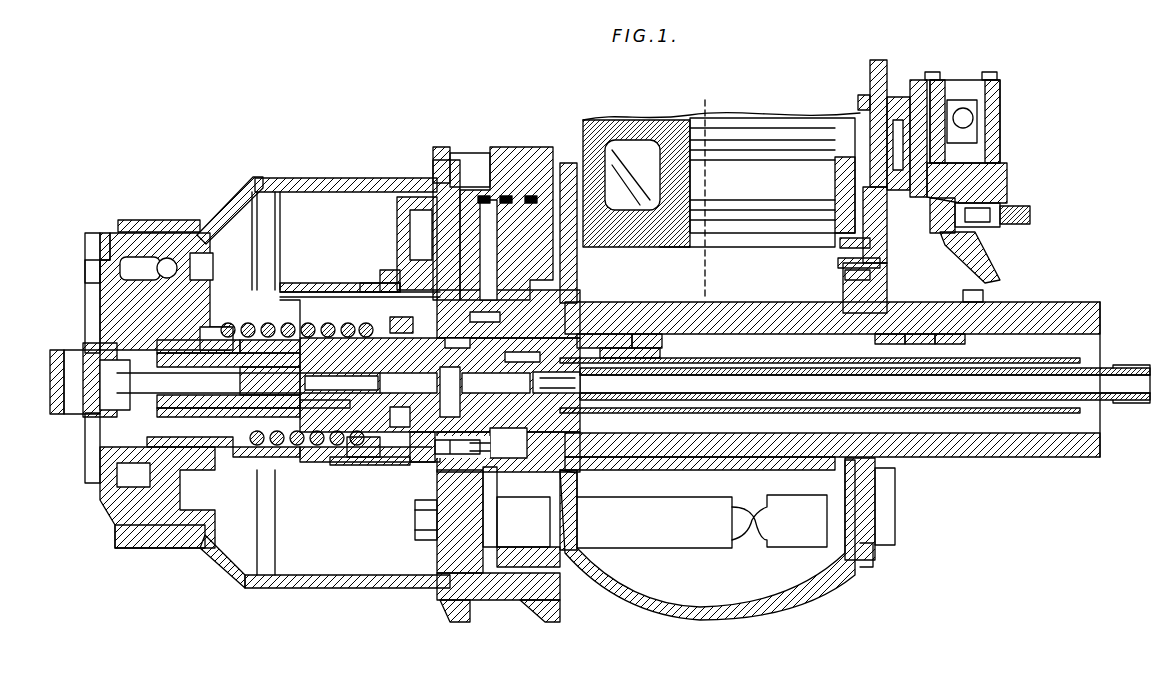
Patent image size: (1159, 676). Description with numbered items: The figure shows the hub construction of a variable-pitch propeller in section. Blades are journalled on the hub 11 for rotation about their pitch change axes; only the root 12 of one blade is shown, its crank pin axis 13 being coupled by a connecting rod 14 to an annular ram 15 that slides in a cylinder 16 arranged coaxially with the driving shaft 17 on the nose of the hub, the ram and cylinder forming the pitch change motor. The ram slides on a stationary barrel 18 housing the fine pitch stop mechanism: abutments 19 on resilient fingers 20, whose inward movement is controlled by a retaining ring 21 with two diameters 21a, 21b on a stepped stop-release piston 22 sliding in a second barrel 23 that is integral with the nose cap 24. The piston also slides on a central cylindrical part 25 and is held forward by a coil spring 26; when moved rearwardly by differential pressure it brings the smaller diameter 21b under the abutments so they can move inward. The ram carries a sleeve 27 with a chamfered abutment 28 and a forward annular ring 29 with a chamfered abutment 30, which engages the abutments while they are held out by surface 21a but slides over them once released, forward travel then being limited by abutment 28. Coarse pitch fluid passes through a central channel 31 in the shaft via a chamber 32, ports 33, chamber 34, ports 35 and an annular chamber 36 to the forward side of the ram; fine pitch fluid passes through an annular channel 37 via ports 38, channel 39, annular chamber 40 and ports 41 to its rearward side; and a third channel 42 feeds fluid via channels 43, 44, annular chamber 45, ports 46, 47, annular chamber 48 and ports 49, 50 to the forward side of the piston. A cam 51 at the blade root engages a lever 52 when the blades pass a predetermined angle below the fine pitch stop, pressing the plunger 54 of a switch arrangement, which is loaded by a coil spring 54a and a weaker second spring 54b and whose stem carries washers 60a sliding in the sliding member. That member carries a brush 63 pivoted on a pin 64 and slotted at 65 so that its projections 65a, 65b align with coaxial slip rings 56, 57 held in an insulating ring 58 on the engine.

The hub 11 is at (810, 130).
The blade root 12 is at (745, 112).
The crank pin axis 13 is at (825, 493).
The connecting rod 14 is at (748, 535).
The ram 15 is at (450, 200).
The cylinder 16 is at (370, 180).
The driving shaft 17 is at (762, 310).
The stationary barrel 18 is at (294, 300).
The abutments 19 is at (228, 288).
The resilient fingers 20 is at (310, 290).
The retaining ring 21 is at (150, 262).
The larger diameter surface 21a is at (165, 240).
The smaller diameter part 21b is at (108, 235).
The stop-release piston 22 is at (110, 300).
The second barrel 23 is at (92, 268).
The nose cap 24 is at (110, 313).
The central cylindrical part 25 is at (300, 322).
The coil spring 26 is at (262, 443).
The sleeve 27 is at (412, 272).
The chamfered abutment 28 is at (388, 272).
The annular ring 29 is at (368, 284).
The chamfered abutment 30 is at (340, 285).
The channel 31 is at (852, 395).
The chamber 32 is at (420, 391).
The ports 33 is at (360, 445).
The chamber 34 is at (372, 462).
The ports 35 is at (415, 440).
The annular chamber 36 is at (292, 449).
The annular channel 37 is at (897, 403).
The ports 38 is at (590, 325).
The channel 39 is at (540, 392).
The annular chamber 40 is at (479, 443).
The ports 41 is at (500, 195).
The third channel 42 is at (690, 310).
The channel 43 is at (612, 345).
The channel 44 is at (484, 196).
The annular chamber 45 is at (342, 312).
The port 46 is at (320, 318).
The port 47 is at (310, 408).
The annular chamber 48 is at (218, 398).
The port 49 is at (245, 352).
The port 50 is at (205, 350).
The cam 51 is at (705, 250).
The lever 52 is at (838, 262).
The plunger 54 is at (845, 274).
The coil spring 54a is at (865, 200).
The second coil spring 54b is at (840, 244).
The slip ring 56 is at (960, 130).
The slip ring 57 is at (980, 255).
The insulating ring 58 is at (975, 240).
The washers 60a is at (878, 320).
The brush 63 is at (915, 250).
The pin 64 is at (900, 120).
The slot 65 is at (990, 280).
The projection 65a is at (930, 235).
The projection 65b is at (940, 290).